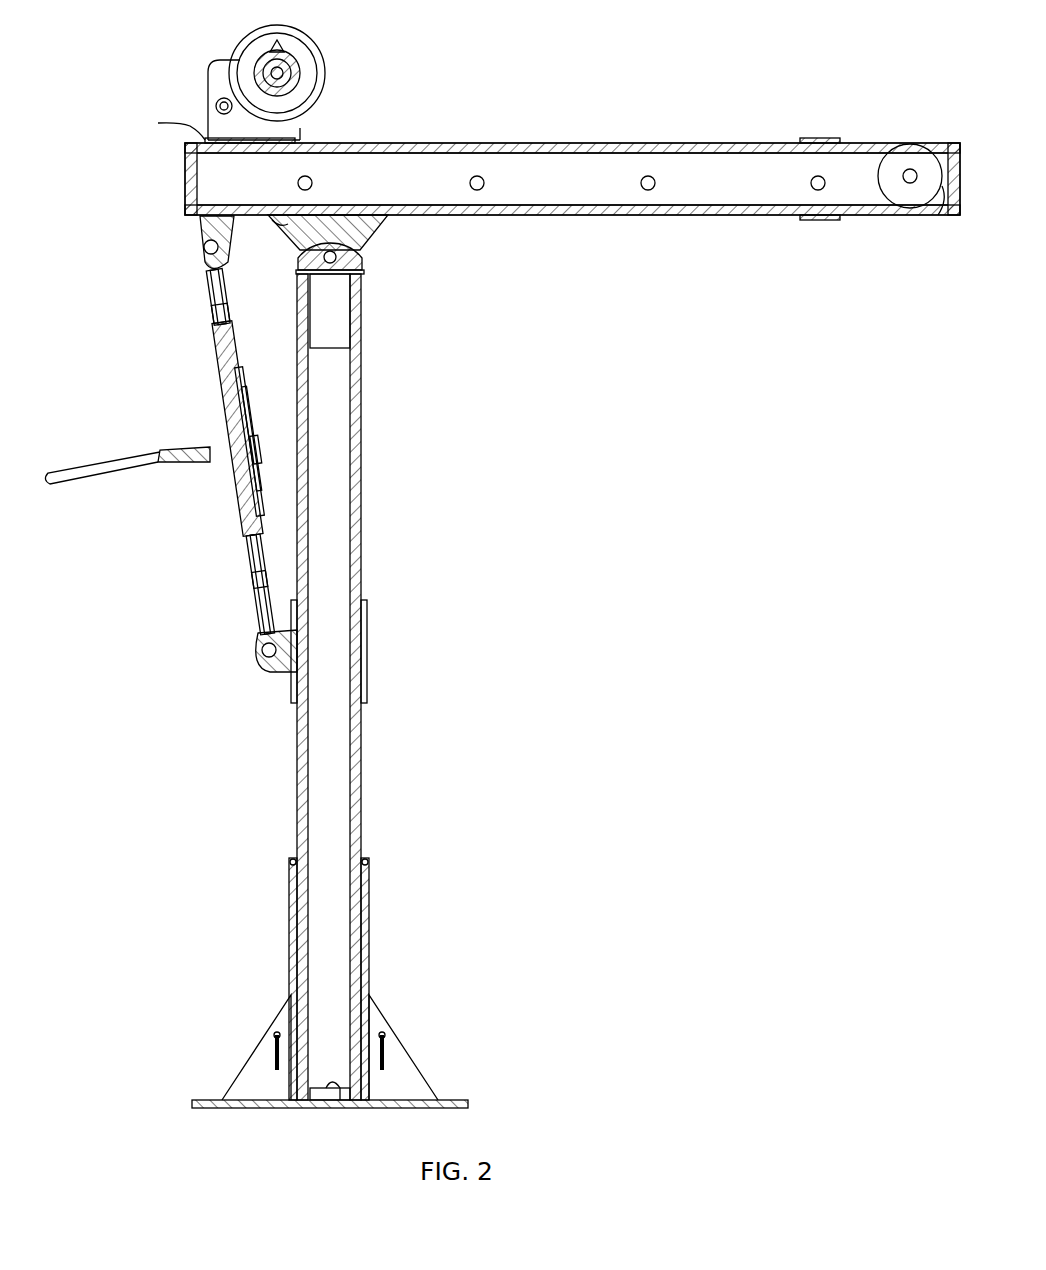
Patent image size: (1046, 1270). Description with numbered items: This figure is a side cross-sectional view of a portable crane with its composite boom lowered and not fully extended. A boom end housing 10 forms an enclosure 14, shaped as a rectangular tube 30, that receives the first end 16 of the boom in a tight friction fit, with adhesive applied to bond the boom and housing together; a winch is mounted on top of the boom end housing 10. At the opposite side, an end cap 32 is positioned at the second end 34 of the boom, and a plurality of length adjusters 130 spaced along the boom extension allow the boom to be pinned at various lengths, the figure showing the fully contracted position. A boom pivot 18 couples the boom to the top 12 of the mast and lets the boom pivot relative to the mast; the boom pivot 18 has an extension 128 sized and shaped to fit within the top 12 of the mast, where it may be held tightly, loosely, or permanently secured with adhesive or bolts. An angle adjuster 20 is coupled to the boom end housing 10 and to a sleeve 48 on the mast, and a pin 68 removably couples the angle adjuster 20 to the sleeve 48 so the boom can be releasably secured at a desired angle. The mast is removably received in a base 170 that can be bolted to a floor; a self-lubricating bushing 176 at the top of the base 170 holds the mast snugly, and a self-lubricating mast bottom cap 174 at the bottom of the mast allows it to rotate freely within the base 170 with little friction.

The boom end housing 10 is at (166, 125).
The top of the mast 12 is at (358, 280).
The enclosure 14 is at (328, 246).
The first end of the boom 16 is at (205, 152).
The boom pivot 18 is at (360, 262).
The angle adjuster 20 is at (215, 360).
The rectangular tube 30 is at (266, 230).
The end cap 32 is at (945, 166).
The second end of the boom 34 is at (942, 205).
The sleeve 48 is at (367, 622).
The pin 68 is at (262, 652).
The extension 128 is at (350, 306).
The length adjusters 130 is at (308, 176).
The base 170 is at (406, 1048).
The mast bottom cap 174 is at (332, 1088).
The bushing 176 is at (369, 860).